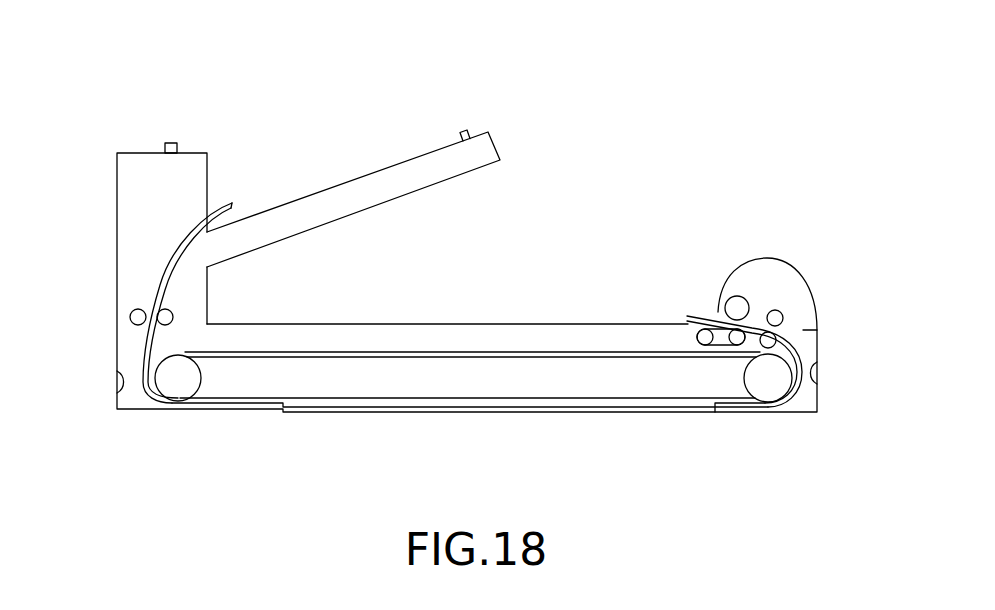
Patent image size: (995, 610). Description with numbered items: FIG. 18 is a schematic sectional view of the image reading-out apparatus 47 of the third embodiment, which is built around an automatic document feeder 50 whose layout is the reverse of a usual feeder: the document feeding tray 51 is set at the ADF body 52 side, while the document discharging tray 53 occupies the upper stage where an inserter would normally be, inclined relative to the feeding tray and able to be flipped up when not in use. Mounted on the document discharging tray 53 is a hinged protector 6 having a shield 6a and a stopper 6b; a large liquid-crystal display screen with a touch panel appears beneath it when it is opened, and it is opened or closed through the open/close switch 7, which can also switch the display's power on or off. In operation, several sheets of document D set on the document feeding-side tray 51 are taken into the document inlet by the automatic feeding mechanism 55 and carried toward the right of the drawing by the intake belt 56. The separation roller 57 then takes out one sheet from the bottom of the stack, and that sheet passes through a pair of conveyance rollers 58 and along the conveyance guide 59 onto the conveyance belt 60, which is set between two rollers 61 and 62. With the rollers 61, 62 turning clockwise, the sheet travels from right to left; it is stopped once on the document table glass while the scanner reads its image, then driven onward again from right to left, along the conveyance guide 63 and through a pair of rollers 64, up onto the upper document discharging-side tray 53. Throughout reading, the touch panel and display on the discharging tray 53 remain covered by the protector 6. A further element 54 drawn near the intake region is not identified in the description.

The protector 6 is at (393, 70).
The shield 6a is at (366, 171).
The stopper 6b is at (466, 128).
The open/close switch 7 is at (174, 141).
The image reading-out apparatus 47 is at (606, 89).
The automatic document feeder 50 is at (588, 234).
The document feeding tray 51 is at (627, 321).
The ADF body 52 is at (805, 333).
The document discharging tray 53 is at (443, 172).
The upper guide plate 54 is at (717, 313).
The automatic feeding mechanism 55 is at (683, 434).
The intake belt 56 is at (697, 327).
The separation roller 57 is at (737, 304).
The pair of conveyance rollers 58 is at (772, 336).
The conveyance guide 59 is at (812, 374).
The conveyance belt 60 is at (520, 392).
The roller 61 is at (766, 386).
The roller 62 is at (178, 382).
The conveyance guide 63 is at (119, 394).
The pair of rollers 64 is at (157, 310).
The document D is at (797, 405).